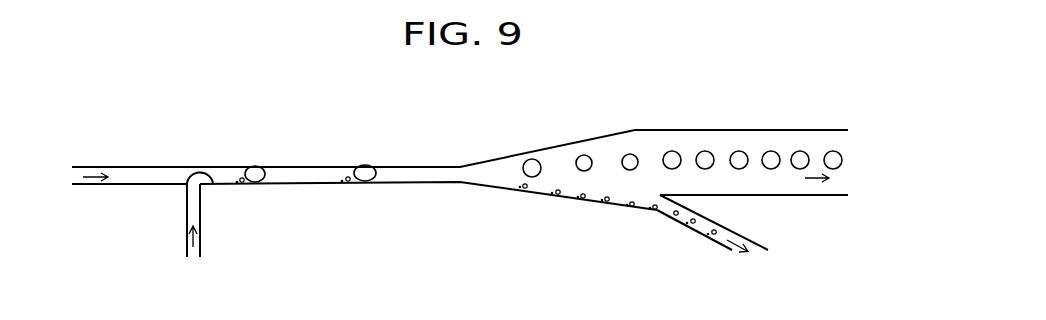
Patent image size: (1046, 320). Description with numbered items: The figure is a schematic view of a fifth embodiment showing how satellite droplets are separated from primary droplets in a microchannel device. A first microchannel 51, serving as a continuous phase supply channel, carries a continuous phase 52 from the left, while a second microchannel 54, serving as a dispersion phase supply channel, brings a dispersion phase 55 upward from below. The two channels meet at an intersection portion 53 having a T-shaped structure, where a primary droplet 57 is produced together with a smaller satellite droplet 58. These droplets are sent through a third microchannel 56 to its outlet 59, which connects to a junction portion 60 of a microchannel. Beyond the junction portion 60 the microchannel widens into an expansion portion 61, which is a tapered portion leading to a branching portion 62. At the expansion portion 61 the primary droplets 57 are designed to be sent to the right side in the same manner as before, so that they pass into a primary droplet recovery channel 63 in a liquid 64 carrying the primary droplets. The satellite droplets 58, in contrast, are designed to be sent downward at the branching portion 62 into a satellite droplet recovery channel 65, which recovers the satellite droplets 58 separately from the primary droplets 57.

The first microchannel 51 is at (139, 168).
The continuous phase 52 is at (93, 177).
The intersection portion 53 is at (195, 175).
The second microchannel 54 is at (198, 210).
The dispersion phase 55 is at (195, 235).
The third microchannel 56 is at (325, 166).
The primary droplet 57 is at (258, 167).
The satellite droplet 58 is at (240, 178).
The outlet 59 is at (444, 173).
The junction portion 60 is at (458, 173).
The expansion portion 61 is at (582, 140).
The branching portion 62 is at (655, 198).
The primary droplet recovery channel 63 is at (780, 130).
The liquid carrying the primary droplets 64 is at (815, 178).
The satellite droplet recovery channel 65 is at (678, 220).